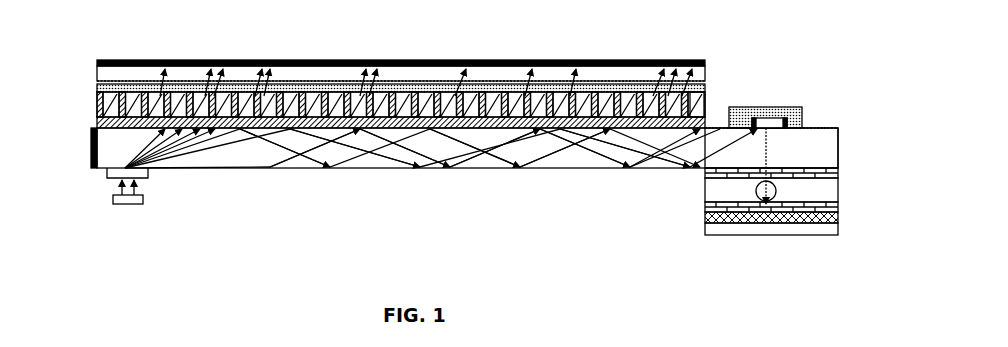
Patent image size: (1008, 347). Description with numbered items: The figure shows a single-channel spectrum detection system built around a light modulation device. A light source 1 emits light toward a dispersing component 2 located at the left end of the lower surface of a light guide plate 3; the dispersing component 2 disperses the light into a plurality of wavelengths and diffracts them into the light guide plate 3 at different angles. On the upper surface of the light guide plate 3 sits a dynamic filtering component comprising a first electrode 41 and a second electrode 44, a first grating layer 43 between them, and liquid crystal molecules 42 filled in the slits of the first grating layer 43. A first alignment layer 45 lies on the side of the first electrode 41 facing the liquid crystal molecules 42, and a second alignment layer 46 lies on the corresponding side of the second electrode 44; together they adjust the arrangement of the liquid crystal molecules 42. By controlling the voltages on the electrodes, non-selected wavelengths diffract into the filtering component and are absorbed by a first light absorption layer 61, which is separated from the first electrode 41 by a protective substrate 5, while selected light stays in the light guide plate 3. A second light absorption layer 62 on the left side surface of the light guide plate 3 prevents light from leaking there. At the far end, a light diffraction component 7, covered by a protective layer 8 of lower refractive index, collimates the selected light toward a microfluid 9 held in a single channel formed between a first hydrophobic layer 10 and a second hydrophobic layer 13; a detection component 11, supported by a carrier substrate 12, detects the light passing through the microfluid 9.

The light source 1 is at (115, 202).
The dispersing component 2 is at (108, 177).
The light guide plate 3 is at (817, 148).
The protective substrate 5 is at (182, 73).
The light diffraction component 7 is at (787, 120).
The protective layer 8 is at (780, 108).
The microfluid 9 is at (776, 191).
The first hydrophobic layer 10 is at (832, 173).
The detection component 11 is at (837, 218).
The carrier substrate 12 is at (835, 233).
The second hydrophobic layer 13 is at (835, 207).
The first electrode 41 is at (97, 81).
The liquid crystal molecules 42 is at (97, 98).
The first grating layer 43 is at (703, 103).
The second electrode 44 is at (95, 128).
The first alignment layer 45 is at (97, 88).
The second alignment layer 46 is at (97, 122).
The first light absorption layer 61 is at (120, 60).
The second light absorption layer 62 is at (89, 153).